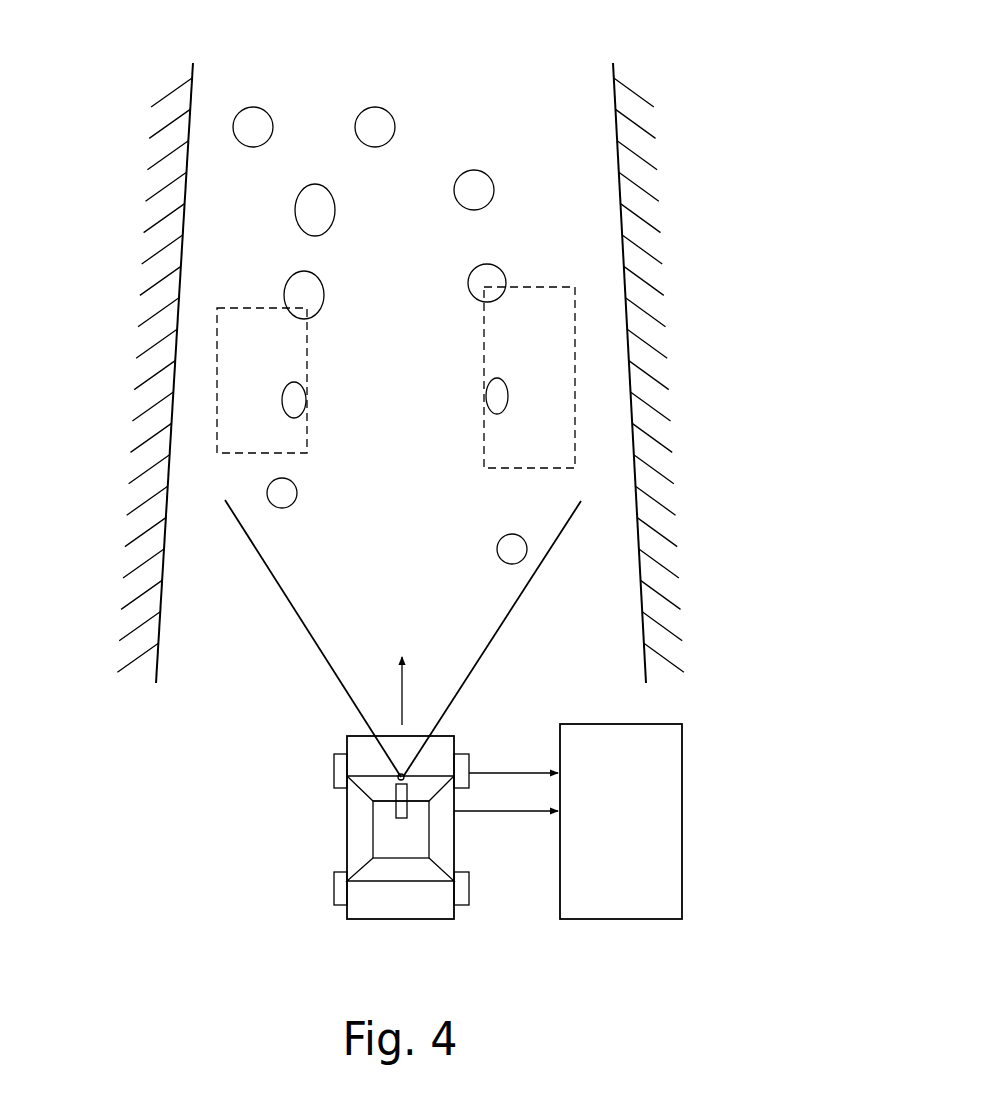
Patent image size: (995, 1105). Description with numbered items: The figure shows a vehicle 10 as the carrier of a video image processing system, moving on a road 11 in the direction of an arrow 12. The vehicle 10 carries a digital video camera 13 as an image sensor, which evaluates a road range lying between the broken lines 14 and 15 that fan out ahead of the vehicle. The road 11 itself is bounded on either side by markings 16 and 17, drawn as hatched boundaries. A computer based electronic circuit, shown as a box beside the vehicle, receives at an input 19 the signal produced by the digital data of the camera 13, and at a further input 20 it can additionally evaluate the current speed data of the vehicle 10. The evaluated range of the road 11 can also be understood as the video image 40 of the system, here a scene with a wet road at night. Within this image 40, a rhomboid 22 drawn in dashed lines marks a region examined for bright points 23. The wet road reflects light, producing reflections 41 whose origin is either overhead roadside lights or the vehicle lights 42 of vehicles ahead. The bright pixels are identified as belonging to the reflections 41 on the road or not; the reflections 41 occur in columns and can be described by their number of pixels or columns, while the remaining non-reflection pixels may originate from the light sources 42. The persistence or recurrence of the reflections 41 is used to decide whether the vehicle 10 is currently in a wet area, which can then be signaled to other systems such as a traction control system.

The vehicle 10 is at (387, 842).
The road 11 is at (612, 431).
The arrow 12 is at (422, 691).
The digital video camera 13 is at (396, 805).
The broken line 14 is at (273, 580).
The broken line 15 is at (533, 580).
The marking 16 is at (178, 345).
The marking 17 is at (630, 347).
The input 19 is at (502, 772).
The input 20 is at (538, 813).
The rhomboid 22 is at (575, 287).
The bright points 23 is at (399, 534).
The video image 40 is at (229, 189).
The reflections 41 is at (302, 295).
The vehicle lights 42 is at (247, 112).